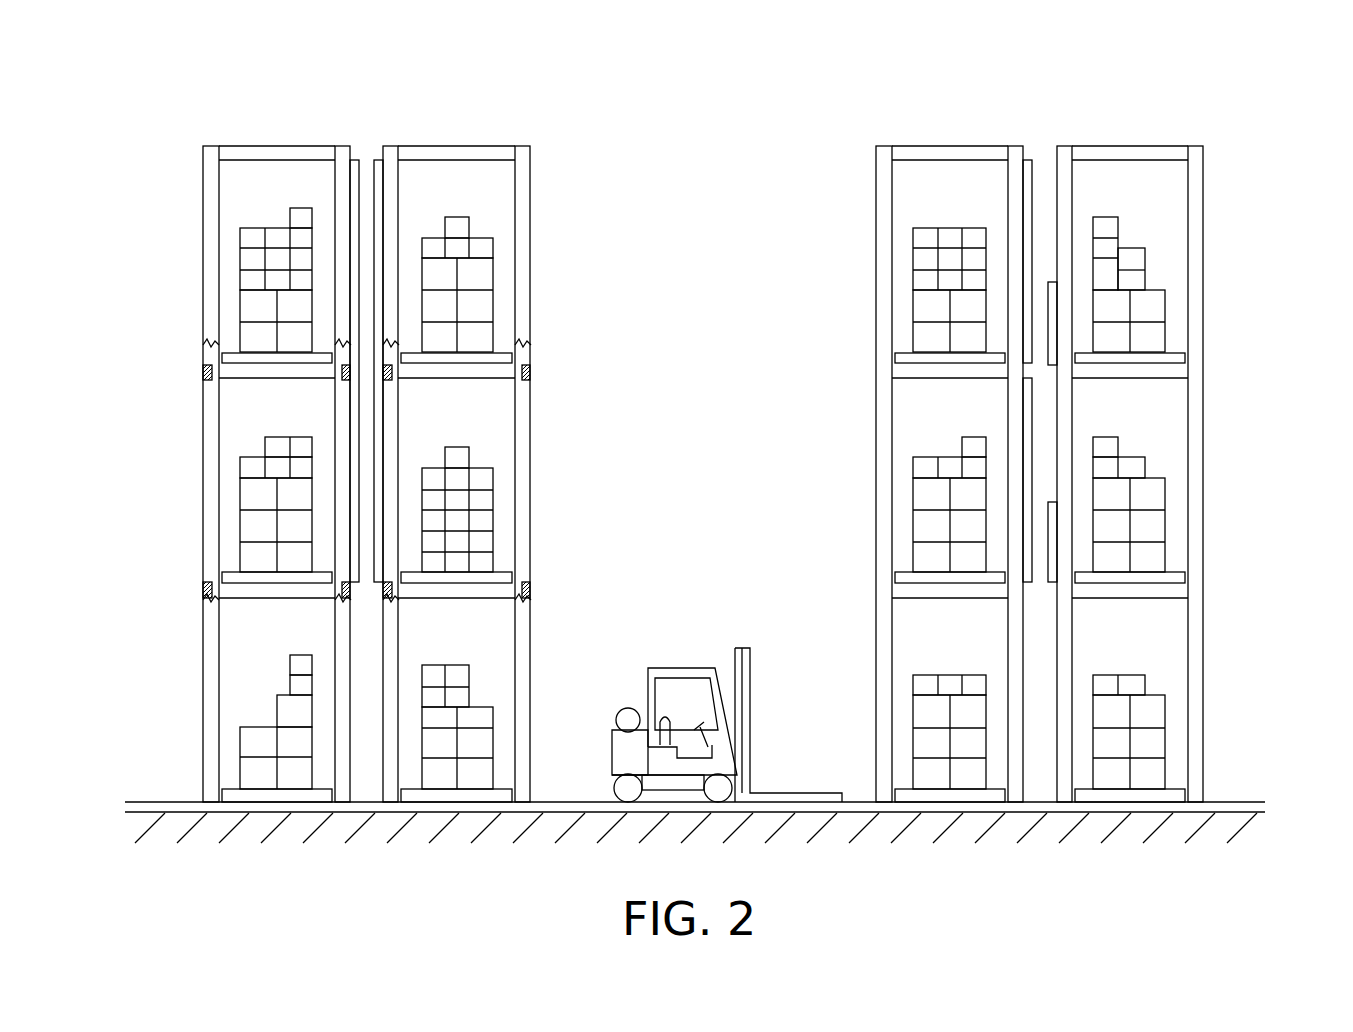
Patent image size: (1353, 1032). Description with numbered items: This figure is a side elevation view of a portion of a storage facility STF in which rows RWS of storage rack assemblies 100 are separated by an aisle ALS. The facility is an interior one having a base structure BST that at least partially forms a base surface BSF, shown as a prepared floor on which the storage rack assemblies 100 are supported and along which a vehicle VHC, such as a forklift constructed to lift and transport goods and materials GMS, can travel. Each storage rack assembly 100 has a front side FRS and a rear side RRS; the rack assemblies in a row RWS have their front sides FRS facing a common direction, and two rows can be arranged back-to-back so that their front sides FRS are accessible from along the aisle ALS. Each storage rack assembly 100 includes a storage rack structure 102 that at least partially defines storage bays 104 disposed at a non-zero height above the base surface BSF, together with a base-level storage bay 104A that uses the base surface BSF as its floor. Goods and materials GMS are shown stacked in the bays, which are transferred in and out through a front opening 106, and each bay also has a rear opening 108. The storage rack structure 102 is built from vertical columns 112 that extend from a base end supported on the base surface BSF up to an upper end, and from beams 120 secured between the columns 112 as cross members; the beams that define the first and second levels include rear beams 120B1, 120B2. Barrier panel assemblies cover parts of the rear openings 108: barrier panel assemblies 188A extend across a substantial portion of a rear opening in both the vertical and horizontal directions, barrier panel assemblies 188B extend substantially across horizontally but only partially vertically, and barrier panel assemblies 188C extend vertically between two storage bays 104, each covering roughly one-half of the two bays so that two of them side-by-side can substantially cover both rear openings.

The storage rack assembly 100 is at (285, 137).
The storage rack structure 102 is at (205, 628).
The storage bay 104 is at (243, 187).
The base-level storage bay 104A is at (247, 668).
The front opening 106 is at (205, 465).
The rear opening 108 is at (335, 283).
The column 112 is at (208, 297).
The beam 120 is at (247, 148).
The rear beam 120B1 is at (342, 605).
The rear beam 120B2 is at (342, 387).
The barrier panel assembly 188A is at (1025, 298).
The barrier panel assembly 188B is at (1053, 342).
The barrier panel assembly 188C is at (378, 242).
The aisle ALS is at (100, 150).
The front side FRS is at (187, 150).
The rear side RRS is at (340, 135).
The storage facility STF is at (1178, 90).
The row RWS is at (275, 848).
The base surface BSF is at (160, 802).
The base structure BST is at (128, 828).
The vehicle VHC is at (710, 655).
The goods and materials GMS is at (243, 500).